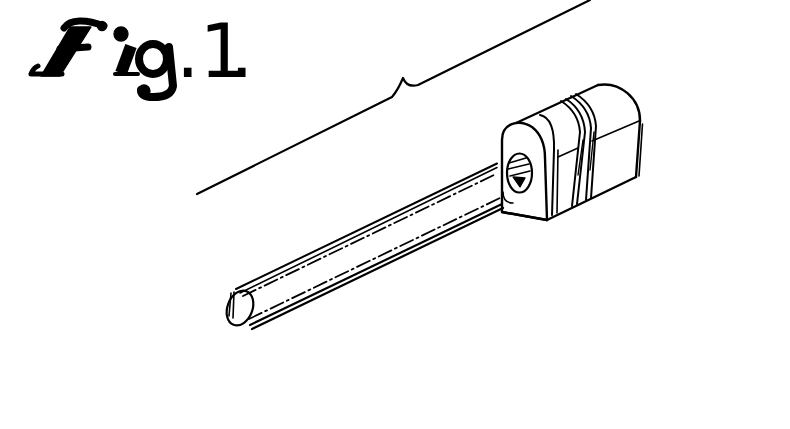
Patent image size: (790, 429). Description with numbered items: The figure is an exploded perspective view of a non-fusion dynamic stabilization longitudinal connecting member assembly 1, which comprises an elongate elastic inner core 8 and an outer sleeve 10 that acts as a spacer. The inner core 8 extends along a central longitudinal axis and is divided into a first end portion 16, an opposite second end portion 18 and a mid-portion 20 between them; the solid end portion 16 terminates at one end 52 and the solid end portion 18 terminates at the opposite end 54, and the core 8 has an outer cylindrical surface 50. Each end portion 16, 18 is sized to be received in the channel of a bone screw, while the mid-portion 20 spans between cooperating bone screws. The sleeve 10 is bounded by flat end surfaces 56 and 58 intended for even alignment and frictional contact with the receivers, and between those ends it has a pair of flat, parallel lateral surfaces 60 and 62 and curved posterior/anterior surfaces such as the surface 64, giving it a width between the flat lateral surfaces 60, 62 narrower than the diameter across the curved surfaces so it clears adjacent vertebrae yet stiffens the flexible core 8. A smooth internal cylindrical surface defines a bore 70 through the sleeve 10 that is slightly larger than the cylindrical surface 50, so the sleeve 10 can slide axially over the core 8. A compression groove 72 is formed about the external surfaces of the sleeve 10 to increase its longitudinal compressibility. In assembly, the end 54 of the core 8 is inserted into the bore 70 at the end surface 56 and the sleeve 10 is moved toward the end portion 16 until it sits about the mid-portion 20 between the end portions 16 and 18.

The longitudinal connecting member assembly 1 is at (518, 255).
The inner core 8 is at (332, 244).
The outer sleeve 10 is at (563, 100).
The first end portion 16 is at (286, 312).
The second end portion 18 is at (475, 216).
The mid-portion 20 is at (385, 250).
The cylindrical surface 50 is at (327, 286).
The end 52 is at (236, 324).
The end 54 is at (504, 166).
The flat end surface 56 is at (528, 223).
The flat end surface 58 is at (639, 146).
The lateral surface 60 is at (606, 186).
The lateral surface 62 is at (503, 141).
The curved posterior/anterior surface 64 is at (613, 102).
The bore 70 is at (522, 207).
The compression groove 72 is at (549, 121).